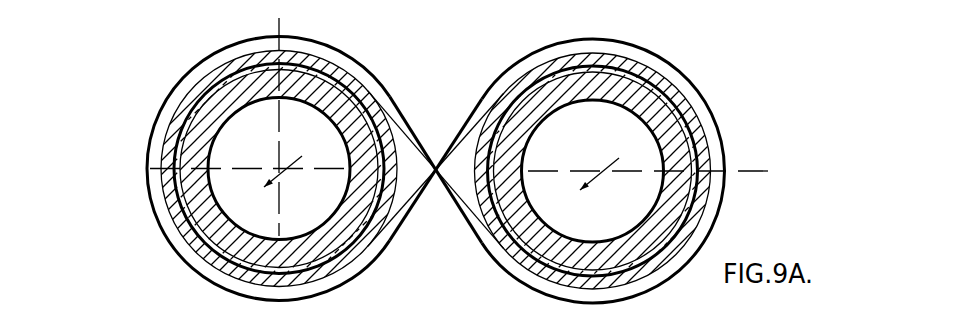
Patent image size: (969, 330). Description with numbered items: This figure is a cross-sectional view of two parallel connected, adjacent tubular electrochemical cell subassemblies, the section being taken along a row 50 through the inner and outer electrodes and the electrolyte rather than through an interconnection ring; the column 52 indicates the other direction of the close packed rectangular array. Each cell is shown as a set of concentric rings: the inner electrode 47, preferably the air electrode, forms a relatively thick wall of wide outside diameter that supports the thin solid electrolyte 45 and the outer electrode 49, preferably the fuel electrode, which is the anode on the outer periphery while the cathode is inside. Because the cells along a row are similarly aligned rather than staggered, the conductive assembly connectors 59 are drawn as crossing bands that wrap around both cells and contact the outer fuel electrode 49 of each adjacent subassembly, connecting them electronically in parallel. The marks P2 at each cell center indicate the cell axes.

The column 52 is at (281, 22).
The row 50 is at (150, 168).
The solid electrolyte 45 is at (693, 130).
The inner electrode 47 is at (687, 192).
The outer electrode 49 is at (663, 82).
The conductive assembly connectors 59 is at (462, 212).
The pivot axis P2 is at (454, 163).